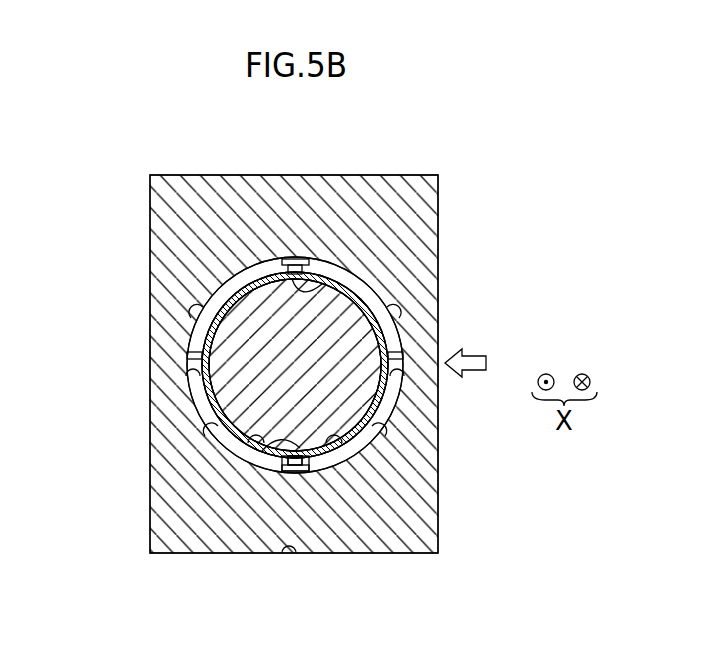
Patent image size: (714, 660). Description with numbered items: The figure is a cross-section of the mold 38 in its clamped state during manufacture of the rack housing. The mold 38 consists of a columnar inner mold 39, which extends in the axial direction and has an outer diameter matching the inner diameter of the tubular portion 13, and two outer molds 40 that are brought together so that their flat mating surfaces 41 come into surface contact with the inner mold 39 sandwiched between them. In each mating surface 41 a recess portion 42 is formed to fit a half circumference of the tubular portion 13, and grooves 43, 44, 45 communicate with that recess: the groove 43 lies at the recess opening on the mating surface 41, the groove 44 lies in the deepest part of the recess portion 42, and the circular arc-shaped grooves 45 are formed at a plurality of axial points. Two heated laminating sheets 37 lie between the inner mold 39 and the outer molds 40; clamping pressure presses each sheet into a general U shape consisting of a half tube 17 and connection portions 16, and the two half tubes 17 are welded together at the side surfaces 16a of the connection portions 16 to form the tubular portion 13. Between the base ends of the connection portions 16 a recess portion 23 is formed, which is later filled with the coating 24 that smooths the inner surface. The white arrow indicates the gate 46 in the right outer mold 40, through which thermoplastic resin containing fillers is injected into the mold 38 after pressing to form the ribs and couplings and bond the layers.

The tubular portion 13 is at (230, 437).
The connection portion 16 is at (283, 261).
The side surface of connection portion 16a is at (320, 281).
The half tube 17 is at (238, 365).
The recess portion 23 is at (330, 458).
The coating 24 is at (295, 460).
The laminating sheet 37 is at (208, 317).
The mold 38 is at (506, 172).
The inner mold 39 is at (242, 386).
The outer mold 40 is at (199, 172).
The mating surface 41 is at (295, 262).
The recess portion 42 is at (244, 441).
The groove 43 is at (290, 266).
The groove 44 is at (197, 371).
The groove 45 is at (212, 430).
The gate 46 is at (445, 357).